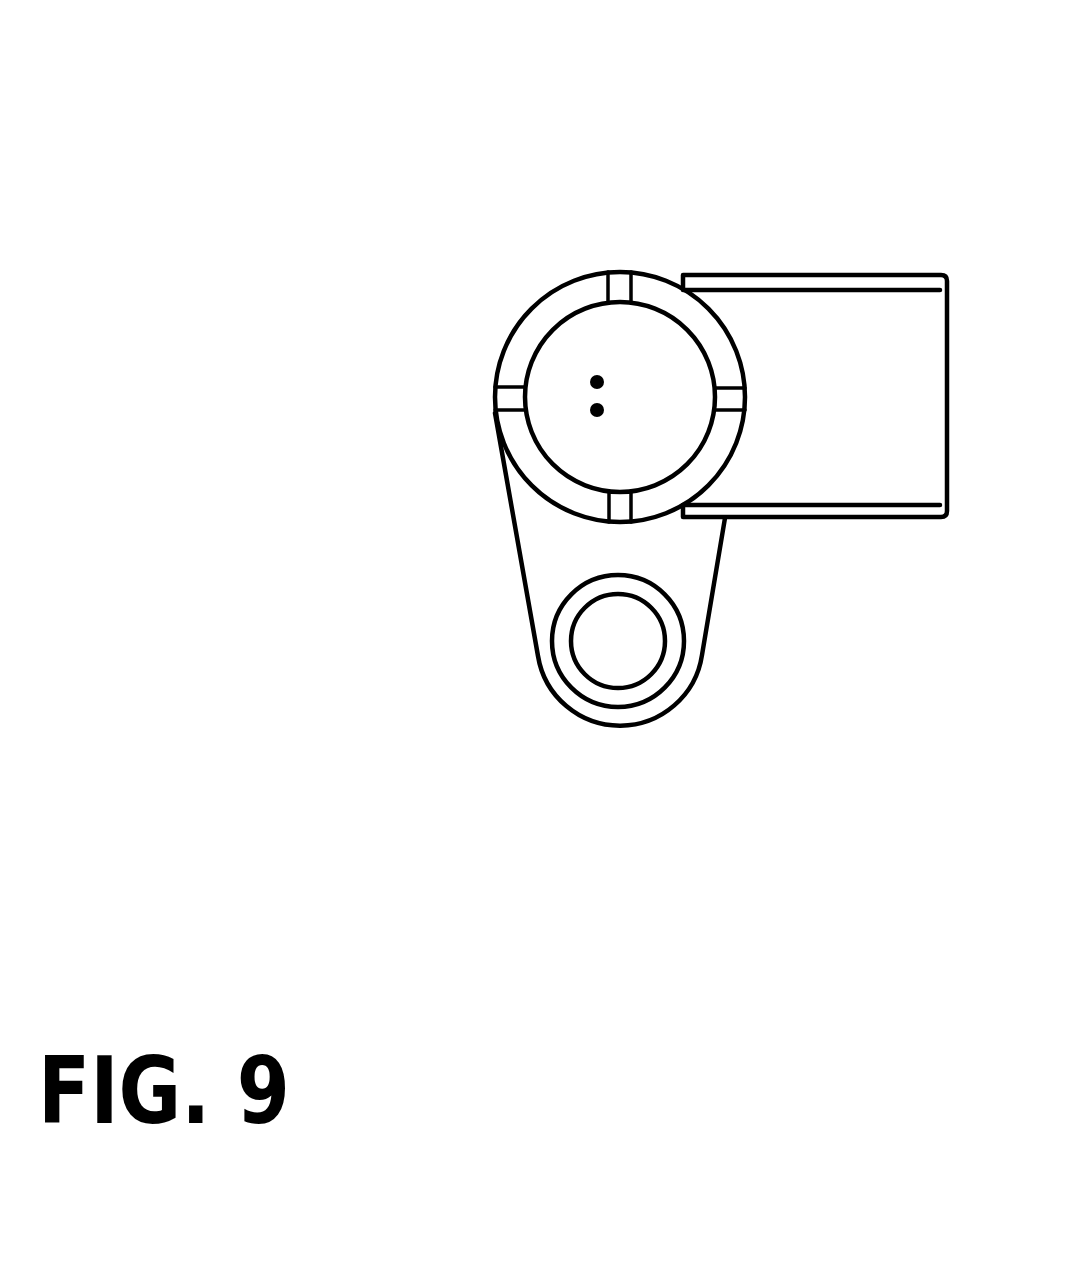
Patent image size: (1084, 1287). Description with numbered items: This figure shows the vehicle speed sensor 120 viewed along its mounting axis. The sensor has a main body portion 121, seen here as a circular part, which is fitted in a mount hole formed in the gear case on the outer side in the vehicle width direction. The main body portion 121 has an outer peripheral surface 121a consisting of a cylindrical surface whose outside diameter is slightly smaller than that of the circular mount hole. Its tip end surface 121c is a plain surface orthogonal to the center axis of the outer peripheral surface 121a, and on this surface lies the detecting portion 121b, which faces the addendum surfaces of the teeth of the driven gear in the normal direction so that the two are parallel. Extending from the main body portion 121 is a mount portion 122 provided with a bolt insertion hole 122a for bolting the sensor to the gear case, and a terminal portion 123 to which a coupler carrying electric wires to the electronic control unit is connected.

The vehicle speed sensor 120 is at (518, 258).
The main body portion 121 is at (490, 360).
The outer peripheral surface 121a is at (578, 277).
The detecting portion 121b is at (600, 382).
The tip end surface 121c is at (575, 448).
The mount portion 122 is at (560, 567).
The bolt insertion hole 122a is at (584, 672).
The terminal portion 123 is at (862, 478).